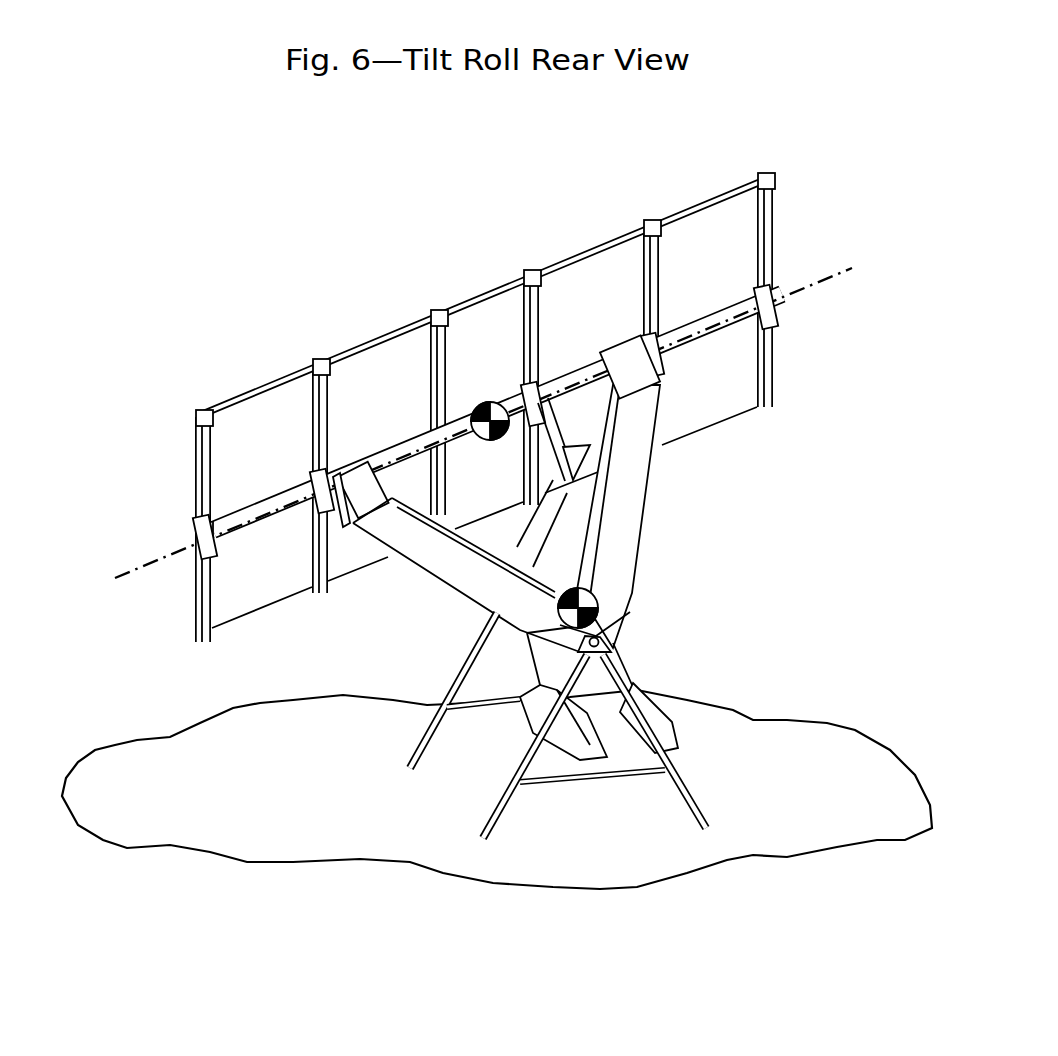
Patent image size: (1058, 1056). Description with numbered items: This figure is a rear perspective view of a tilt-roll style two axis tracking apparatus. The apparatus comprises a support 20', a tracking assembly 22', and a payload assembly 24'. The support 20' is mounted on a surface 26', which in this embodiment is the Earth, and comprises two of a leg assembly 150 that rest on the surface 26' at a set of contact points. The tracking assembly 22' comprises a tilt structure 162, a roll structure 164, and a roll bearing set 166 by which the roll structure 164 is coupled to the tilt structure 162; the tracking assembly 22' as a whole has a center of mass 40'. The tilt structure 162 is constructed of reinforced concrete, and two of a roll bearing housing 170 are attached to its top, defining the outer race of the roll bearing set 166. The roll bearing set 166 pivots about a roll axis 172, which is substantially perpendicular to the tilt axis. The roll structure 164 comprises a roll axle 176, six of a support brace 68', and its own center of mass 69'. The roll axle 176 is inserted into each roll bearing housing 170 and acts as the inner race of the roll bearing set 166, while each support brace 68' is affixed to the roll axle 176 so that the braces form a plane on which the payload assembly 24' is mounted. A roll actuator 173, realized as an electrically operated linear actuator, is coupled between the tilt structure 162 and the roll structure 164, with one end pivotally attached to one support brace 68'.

The payload assembly 24' is at (472, 401).
The roll structure 164 is at (397, 372).
The center of mass 69' is at (447, 347).
The support brace 68' is at (485, 401).
The roll axis 172 is at (810, 290).
The roll axle 176 is at (268, 503).
The roll bearing set 166 is at (668, 391).
The roll actuator 173 is at (565, 457).
The tilt structure 162 is at (617, 557).
The tracking assembly 22' is at (595, 454).
The roll bearing housing 170 is at (612, 365).
The center of mass 40' is at (618, 621).
The leg assembly 150 is at (472, 683).
The support 20' is at (612, 725).
The surface 26' is at (497, 805).